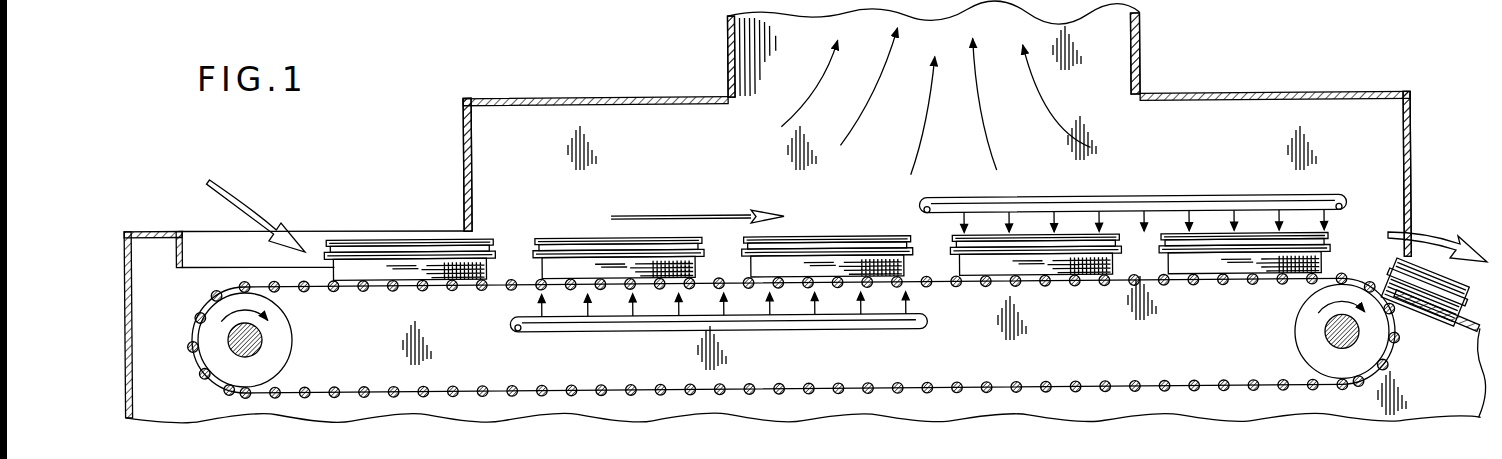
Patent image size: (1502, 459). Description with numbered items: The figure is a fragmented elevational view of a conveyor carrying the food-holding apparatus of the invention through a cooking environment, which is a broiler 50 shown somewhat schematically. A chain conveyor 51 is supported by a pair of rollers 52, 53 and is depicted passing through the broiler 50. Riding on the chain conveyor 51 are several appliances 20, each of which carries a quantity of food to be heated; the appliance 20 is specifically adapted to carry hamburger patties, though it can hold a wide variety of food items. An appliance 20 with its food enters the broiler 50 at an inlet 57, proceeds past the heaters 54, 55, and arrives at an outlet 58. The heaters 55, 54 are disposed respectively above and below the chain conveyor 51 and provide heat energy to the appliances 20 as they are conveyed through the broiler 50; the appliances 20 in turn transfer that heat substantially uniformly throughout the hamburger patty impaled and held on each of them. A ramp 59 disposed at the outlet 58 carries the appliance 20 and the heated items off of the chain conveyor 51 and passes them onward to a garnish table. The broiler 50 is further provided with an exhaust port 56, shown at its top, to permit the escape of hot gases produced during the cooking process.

The appliance 20 is at (560, 238).
The broiler 50 is at (498, 95).
The chain conveyor 51 is at (267, 285).
The roller 52 is at (282, 343).
The roller 53 is at (1293, 332).
The heater 54 is at (745, 333).
The heater 55 is at (1161, 197).
The exhaust port 56 is at (1093, 50).
The inlet 57 is at (465, 225).
The outlet 58 is at (1413, 218).
The ramp 59 is at (1473, 328).